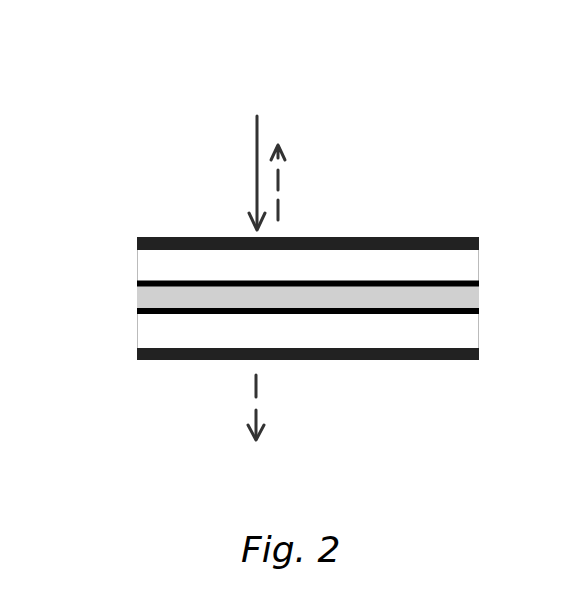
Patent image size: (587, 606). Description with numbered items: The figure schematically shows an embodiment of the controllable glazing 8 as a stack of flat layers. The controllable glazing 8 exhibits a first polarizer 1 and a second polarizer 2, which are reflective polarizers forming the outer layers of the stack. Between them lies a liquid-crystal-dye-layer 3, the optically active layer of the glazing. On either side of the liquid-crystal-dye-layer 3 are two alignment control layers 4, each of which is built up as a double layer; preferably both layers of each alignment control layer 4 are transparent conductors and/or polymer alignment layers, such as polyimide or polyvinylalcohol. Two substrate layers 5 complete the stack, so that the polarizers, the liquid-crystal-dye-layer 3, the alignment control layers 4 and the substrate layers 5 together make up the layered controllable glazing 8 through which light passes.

The first polarizer 1 is at (449, 245).
The second polarizer 2 is at (458, 362).
The liquid-crystal-dye-layer 3 is at (480, 297).
The alignment control layer 4 is at (145, 308).
The substrate layer 5 is at (221, 271).
The controllable glazing 8 is at (373, 163).